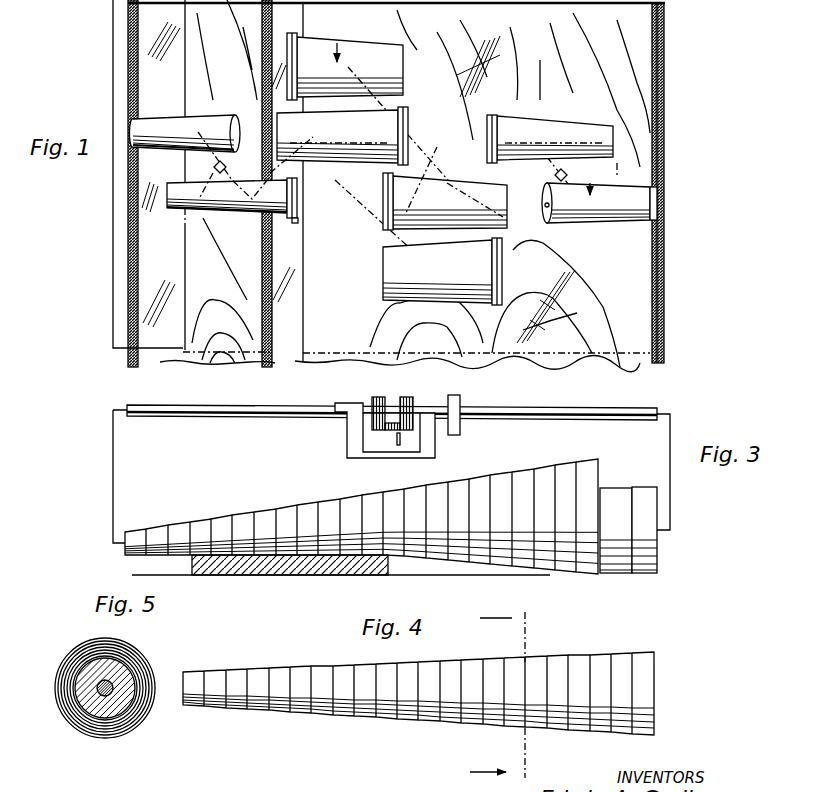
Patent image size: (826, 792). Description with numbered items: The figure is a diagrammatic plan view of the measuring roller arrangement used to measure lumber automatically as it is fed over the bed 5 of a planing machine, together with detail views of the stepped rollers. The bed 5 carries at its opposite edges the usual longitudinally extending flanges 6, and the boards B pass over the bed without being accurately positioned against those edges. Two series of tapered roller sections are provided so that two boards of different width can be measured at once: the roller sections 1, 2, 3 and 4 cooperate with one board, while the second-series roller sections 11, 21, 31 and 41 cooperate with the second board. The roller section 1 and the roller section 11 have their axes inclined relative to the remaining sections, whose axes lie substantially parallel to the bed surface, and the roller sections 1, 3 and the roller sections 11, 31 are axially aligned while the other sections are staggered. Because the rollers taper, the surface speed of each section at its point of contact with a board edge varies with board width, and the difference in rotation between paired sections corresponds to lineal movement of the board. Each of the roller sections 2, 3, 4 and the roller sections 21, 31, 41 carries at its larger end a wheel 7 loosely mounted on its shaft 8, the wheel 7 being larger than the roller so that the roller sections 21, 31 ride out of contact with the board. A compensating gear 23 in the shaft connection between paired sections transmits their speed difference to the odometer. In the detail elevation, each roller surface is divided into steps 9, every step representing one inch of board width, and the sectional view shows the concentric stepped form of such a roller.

In FIG. 1, the roller section 1 is at (162, 117).
In FIG. 1, the roller section 2 is at (252, 222).
In FIG. 1, the roller section 3 is at (362, 147).
In FIG. 1, the roller section 4 is at (381, 277).
In FIG. 1, the bed 5 is at (143, 37).
In FIG. 4, the bed 5 is at (501, 688).
In FIG. 1, the flanges 6 is at (125, 15).
In FIG. 1, the wheel 7 is at (292, 33).
In FIG. 1, the shaft 8 is at (345, 258).
In FIG. 3, the steps 9 is at (247, 520).
In FIG. 4, the steps 9 is at (352, 675).
In FIG. 5, the steps 9 is at (147, 667).
In FIG. 1, the roller section 11 is at (600, 220).
In FIG. 1, the roller section 21 is at (558, 125).
In FIG. 1, the roller section 31 is at (438, 187).
In FIG. 1, the roller section 41 is at (397, 85).
In FIG. 1, the compensating gear 23 is at (212, 167).
In FIG. 1, the boards B is at (200, 70).
In FIG. 3, the boards B is at (272, 575).